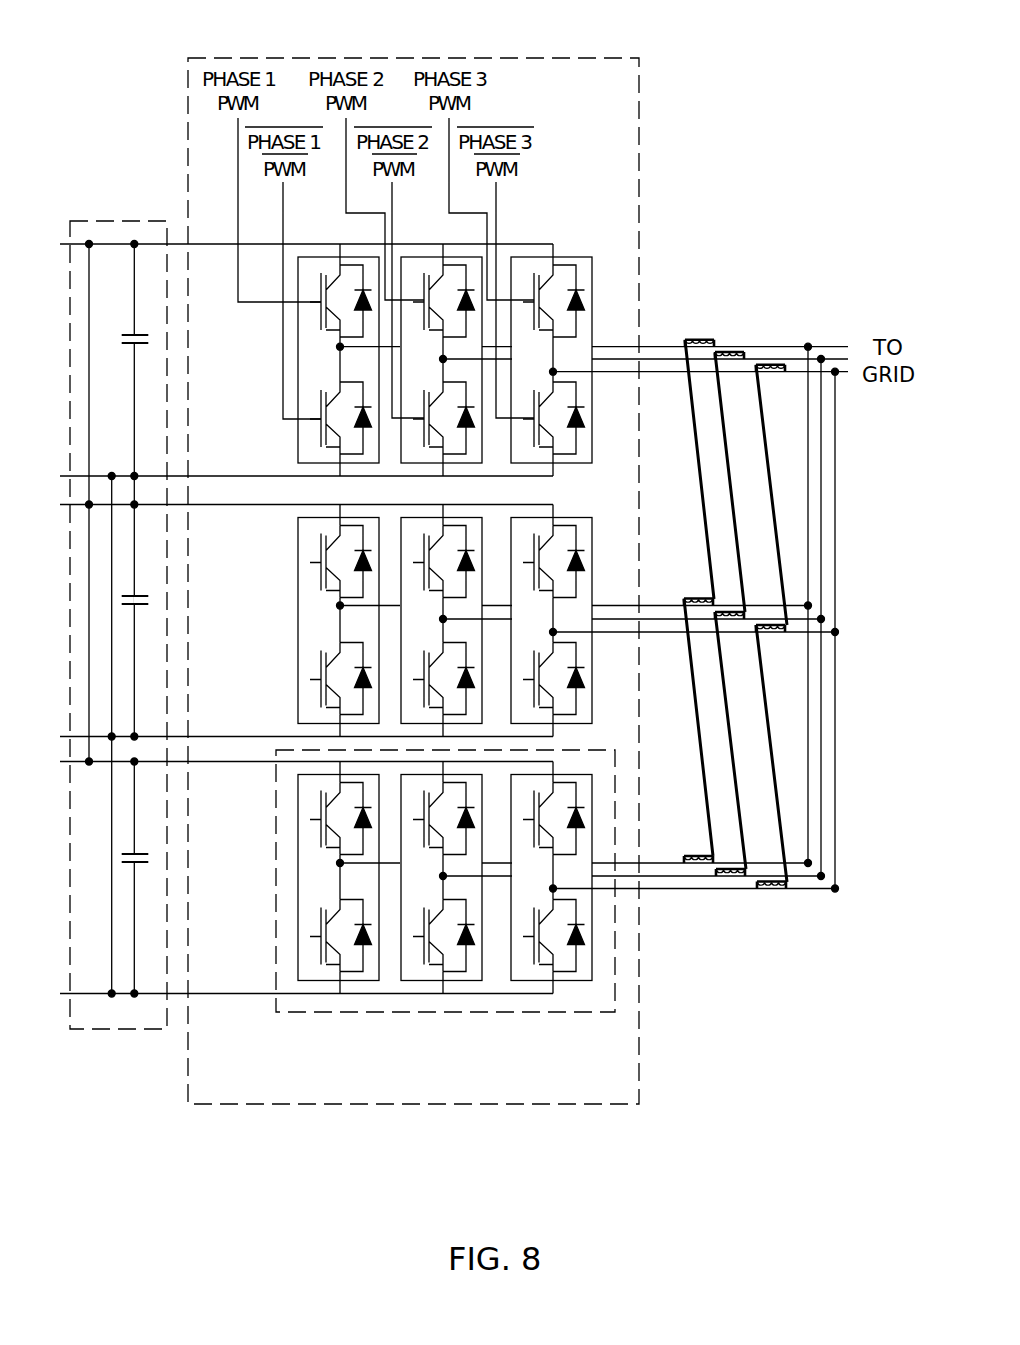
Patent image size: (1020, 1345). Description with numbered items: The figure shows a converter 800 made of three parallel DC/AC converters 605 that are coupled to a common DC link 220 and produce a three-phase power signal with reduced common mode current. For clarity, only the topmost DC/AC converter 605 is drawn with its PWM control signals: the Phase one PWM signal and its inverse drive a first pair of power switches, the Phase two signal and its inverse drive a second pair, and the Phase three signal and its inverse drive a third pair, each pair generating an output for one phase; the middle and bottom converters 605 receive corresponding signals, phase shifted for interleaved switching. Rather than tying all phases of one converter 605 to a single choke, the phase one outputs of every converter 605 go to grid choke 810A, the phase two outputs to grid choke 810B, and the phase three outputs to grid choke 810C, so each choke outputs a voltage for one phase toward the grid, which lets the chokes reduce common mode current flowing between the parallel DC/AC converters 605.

The converter 800 is at (485, 58).
The DC/AC converter 605 is at (383, 1012).
The DC link 220 is at (117, 1029).
The grid choke 810A is at (687, 337).
The grid choke 810B is at (737, 350).
The grid choke 810C is at (778, 363).